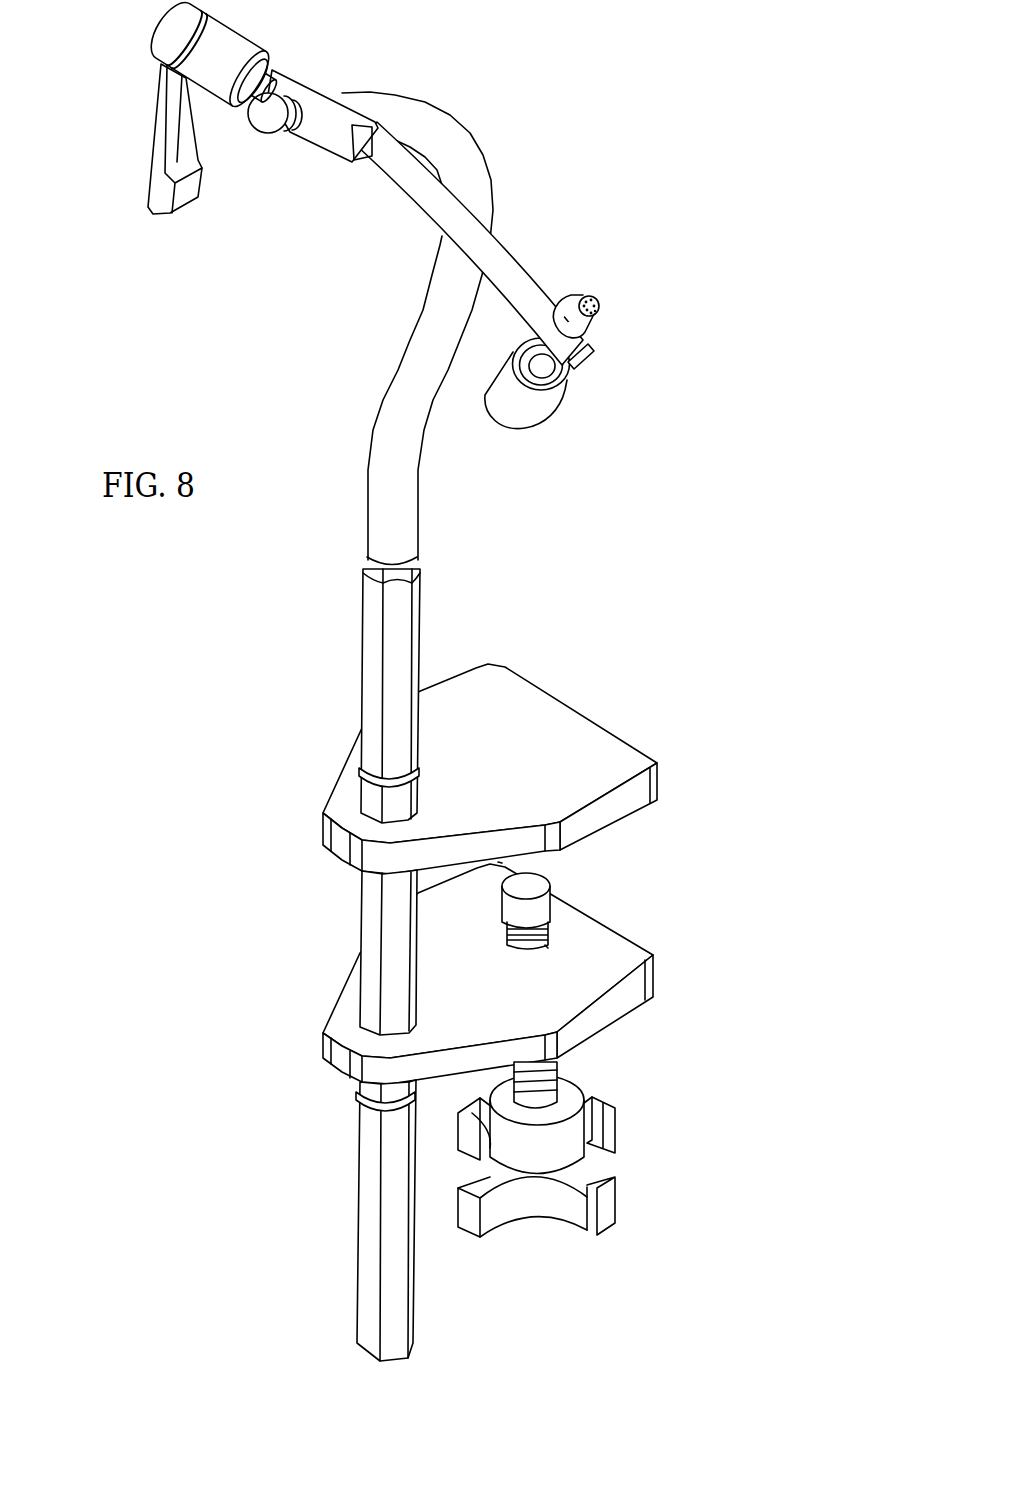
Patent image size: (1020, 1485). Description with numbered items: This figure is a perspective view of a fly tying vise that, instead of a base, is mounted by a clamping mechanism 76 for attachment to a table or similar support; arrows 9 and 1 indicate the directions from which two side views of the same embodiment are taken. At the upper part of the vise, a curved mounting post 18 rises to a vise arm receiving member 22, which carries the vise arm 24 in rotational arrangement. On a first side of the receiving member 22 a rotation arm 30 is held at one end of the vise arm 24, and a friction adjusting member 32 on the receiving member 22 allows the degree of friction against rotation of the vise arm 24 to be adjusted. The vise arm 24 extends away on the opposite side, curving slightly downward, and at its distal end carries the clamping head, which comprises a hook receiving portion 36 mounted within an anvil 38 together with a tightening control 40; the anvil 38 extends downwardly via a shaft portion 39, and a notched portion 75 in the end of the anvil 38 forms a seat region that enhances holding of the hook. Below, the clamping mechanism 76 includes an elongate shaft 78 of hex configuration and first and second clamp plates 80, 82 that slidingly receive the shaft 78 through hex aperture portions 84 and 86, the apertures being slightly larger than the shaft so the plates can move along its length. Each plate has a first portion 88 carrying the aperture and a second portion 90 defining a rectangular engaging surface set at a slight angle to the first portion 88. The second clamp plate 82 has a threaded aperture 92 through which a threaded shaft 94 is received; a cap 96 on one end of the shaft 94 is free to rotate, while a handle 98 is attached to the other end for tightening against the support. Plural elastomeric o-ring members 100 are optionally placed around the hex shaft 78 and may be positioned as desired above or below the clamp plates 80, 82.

The arrow 1 is at (765, 980).
The arrow 9 is at (160, 292).
The curved mounting post 18 is at (424, 458).
The vise arm receiving member 22 is at (340, 98).
The vise arm 24 is at (512, 242).
The rotation arm 30 is at (154, 130).
The friction adjusting member 32 is at (270, 132).
The hook receiving portion 36 is at (592, 294).
The anvil 38 is at (590, 322).
The shaft portion 39 is at (560, 374).
The tightening control 40 is at (540, 413).
The notched portion 75 is at (590, 325).
The clamping mechanism 76 is at (744, 717).
The elongate shaft 78 is at (418, 630).
The first clamp plate 80 is at (557, 737).
The second clamp plate 82 is at (618, 1012).
The hex aperture portion 84 is at (328, 850).
The hex aperture portion 86 is at (358, 1016).
The first portion 88 is at (662, 750).
The second portion 90 is at (312, 815).
The threaded aperture 92 is at (547, 932).
The threaded shaft 94 is at (538, 884).
The cap 96 is at (500, 862).
The handle 98 is at (600, 1140).
The o-ring members 100 is at (360, 775).